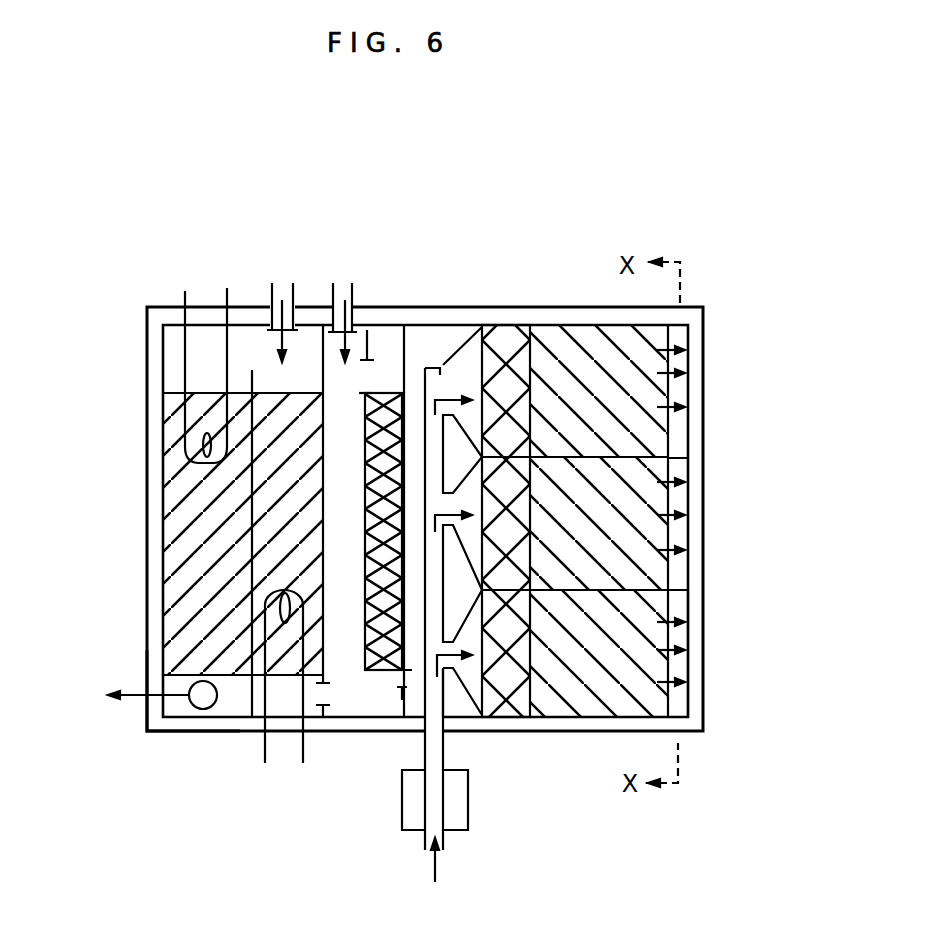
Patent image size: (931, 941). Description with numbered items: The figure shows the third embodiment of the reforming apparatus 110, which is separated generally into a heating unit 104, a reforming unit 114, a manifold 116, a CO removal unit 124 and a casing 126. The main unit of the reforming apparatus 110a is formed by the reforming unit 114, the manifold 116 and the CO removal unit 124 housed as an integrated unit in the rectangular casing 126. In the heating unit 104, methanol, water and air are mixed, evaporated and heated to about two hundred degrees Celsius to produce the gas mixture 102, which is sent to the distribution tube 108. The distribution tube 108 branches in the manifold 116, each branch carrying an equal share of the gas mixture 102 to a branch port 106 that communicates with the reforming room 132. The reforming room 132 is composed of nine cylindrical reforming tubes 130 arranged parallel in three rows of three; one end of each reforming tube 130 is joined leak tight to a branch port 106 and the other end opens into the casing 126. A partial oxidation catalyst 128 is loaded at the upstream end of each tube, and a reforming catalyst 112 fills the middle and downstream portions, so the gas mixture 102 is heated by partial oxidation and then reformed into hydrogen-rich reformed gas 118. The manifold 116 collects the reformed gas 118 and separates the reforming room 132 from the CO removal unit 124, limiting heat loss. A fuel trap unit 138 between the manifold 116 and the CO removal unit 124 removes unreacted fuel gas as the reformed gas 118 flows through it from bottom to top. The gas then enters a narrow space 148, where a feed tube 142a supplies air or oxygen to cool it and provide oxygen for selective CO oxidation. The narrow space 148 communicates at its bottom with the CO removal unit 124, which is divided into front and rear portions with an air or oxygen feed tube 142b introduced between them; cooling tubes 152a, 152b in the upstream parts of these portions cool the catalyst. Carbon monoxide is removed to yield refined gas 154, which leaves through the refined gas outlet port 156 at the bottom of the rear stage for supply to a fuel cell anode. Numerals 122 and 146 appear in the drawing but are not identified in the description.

The reforming apparatus 110 is at (140, 157).
The main unit of the reforming apparatus 110a is at (165, 737).
The casing 126 is at (150, 354).
The CO removal unit 124 is at (148, 248).
The waste liquid 122 is at (165, 553).
The cooling tube 152b is at (185, 292).
The air or oxygen feed tube 142b is at (273, 295).
The refined gas 154 is at (122, 695).
The refined gas outlet port 156 is at (203, 712).
The cooling tube 152a is at (265, 745).
The fuel trap unit 138 is at (405, 253).
The feed tube 142a is at (353, 290).
The narrow space 148 is at (361, 531).
The filter support plate 146 is at (398, 677).
The manifold 116 is at (480, 248).
The distribution tube 108 is at (437, 368).
The partial oxidation catalyst 128 is at (498, 708).
The gas mixture 102 is at (435, 648).
The heating unit 104 is at (455, 798).
The branch port 106 is at (495, 347).
The reforming catalyst 112 is at (592, 687).
The reforming unit 114 is at (695, 248).
The reformed gas 118 is at (693, 367).
The reforming tube 130 is at (708, 458).
The reforming room 132 is at (695, 683).